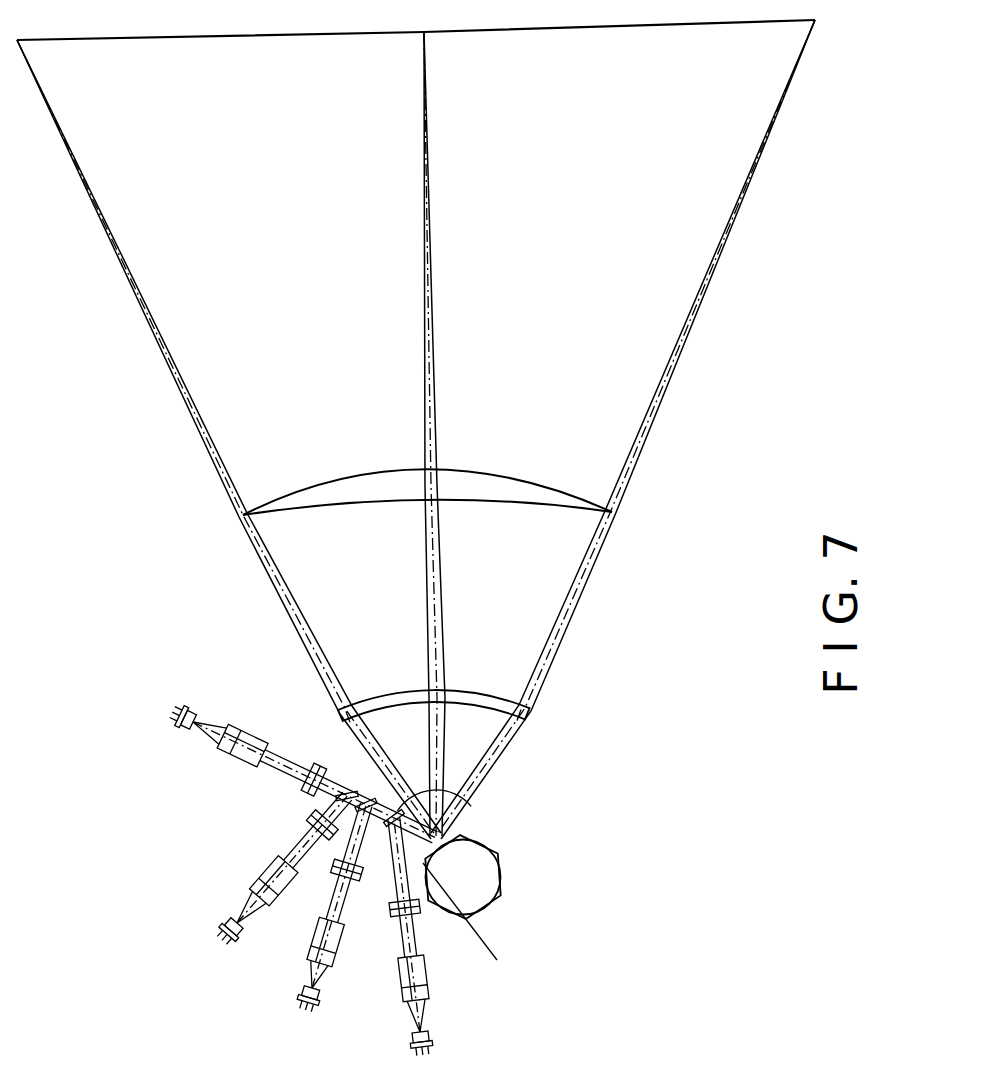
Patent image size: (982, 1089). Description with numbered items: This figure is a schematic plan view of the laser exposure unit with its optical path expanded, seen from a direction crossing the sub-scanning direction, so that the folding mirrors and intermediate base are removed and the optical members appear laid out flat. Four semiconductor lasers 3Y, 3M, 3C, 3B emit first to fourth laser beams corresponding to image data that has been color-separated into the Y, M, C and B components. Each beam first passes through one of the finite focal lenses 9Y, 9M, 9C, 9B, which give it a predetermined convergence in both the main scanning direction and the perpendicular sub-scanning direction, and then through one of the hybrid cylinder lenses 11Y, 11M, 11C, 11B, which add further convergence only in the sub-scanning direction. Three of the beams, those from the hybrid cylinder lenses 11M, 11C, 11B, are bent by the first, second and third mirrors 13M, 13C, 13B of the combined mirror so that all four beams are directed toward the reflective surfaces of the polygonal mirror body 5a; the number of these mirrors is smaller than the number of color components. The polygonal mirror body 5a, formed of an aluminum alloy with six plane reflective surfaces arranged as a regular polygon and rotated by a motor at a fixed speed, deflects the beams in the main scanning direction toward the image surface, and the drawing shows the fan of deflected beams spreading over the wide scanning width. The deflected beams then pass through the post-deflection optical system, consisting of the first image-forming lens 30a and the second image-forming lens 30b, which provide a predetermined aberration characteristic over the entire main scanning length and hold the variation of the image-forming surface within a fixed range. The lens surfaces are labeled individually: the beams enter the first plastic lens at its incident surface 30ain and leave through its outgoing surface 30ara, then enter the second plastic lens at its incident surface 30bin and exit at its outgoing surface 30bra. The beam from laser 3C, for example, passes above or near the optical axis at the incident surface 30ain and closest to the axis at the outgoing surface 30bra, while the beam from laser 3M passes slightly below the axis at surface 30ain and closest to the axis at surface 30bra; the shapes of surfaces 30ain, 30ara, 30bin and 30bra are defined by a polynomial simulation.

The first semiconductor laser 3Y is at (203, 712).
The second semiconductor laser 3M is at (226, 914).
The third semiconductor laser 3C is at (305, 980).
The fourth semiconductor laser 3B is at (406, 1027).
The finite focal lens 9Y is at (217, 750).
The finite focal lens 9M is at (258, 870).
The finite focal lens 9C is at (316, 932).
The finite focal lens 9B is at (426, 982).
The hybrid cylinder lens 11Y is at (298, 768).
The hybrid cylinder lens 11M is at (310, 820).
The hybrid cylinder lens 11C is at (335, 880).
The hybrid cylinder lens 11B is at (392, 910).
The first mirror 13M is at (336, 798).
The second mirror 13C is at (362, 798).
The third mirror 13B is at (471, 806).
The polygonal mirror body 5a is at (487, 870).
The first image-forming lens 30a is at (507, 690).
The outgoing surface of the first image-forming lens 30ara is at (470, 692).
The incident surface of the first image-forming lens 30ain is at (470, 704).
The second image-forming lens 30b is at (557, 499).
The outgoing surface of the second image-forming lens 30bra is at (497, 474).
The incident surface of the second image-forming lens 30bin is at (498, 506).